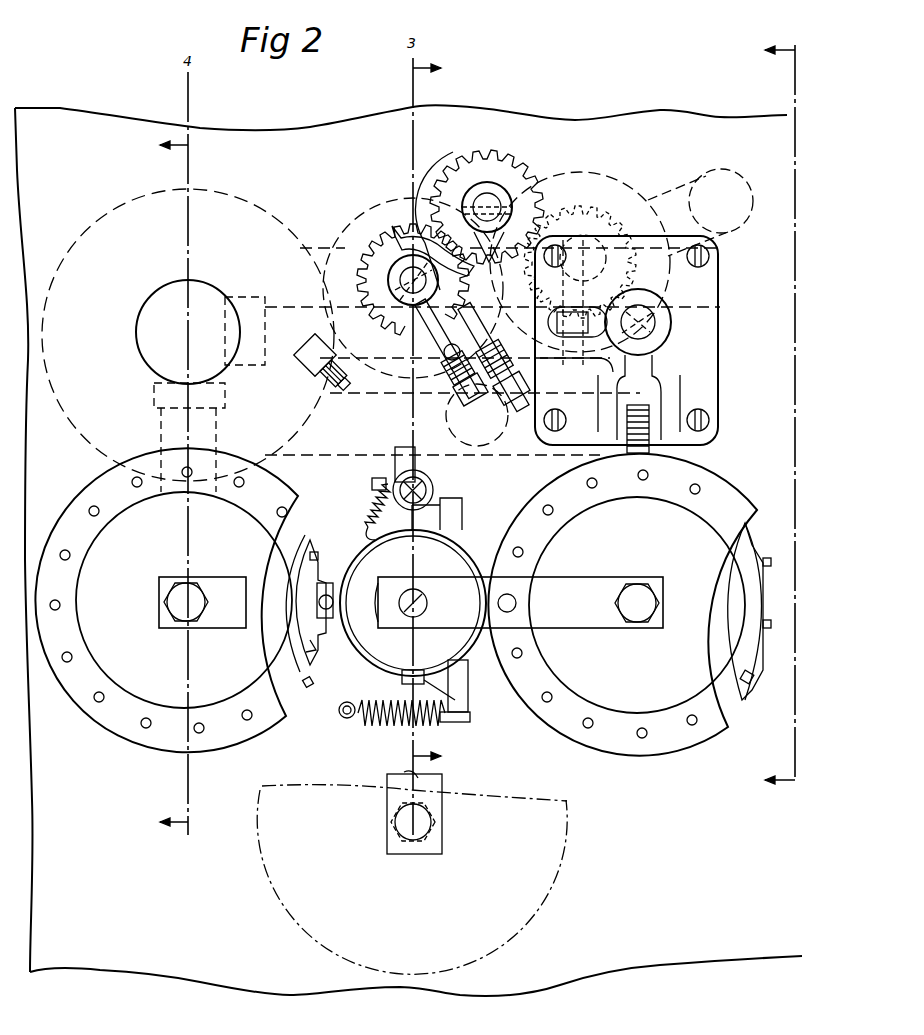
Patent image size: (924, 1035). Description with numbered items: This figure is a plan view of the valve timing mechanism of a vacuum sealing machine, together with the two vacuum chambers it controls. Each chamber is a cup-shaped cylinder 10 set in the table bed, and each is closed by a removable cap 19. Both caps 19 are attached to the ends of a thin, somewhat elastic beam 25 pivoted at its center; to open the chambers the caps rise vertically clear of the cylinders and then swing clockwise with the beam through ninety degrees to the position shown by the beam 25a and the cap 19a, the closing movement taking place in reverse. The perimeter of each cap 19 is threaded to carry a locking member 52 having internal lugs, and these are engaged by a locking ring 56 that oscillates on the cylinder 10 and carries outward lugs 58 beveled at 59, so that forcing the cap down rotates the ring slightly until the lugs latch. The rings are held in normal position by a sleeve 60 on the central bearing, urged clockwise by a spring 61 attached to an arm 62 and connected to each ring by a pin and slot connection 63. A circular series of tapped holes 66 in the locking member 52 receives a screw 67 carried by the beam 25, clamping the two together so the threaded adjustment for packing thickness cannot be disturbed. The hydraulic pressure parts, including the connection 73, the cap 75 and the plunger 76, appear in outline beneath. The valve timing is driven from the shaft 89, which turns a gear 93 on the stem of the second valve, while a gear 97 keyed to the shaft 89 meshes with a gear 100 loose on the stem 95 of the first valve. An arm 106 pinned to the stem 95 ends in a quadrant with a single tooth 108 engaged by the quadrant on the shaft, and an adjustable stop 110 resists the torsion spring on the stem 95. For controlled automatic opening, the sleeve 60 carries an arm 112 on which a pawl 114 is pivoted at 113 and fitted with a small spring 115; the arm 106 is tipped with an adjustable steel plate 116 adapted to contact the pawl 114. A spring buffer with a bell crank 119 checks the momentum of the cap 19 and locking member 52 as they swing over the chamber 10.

The cup-shaped cylinder 10 is at (738, 615).
The cap 19 is at (410, 602).
The cap in open position 19a is at (412, 880).
The beam 25 is at (560, 627).
The beam in open position 25a is at (442, 780).
The locking member 52 is at (672, 752).
The locking ring 56 is at (766, 568).
The lugs 58 is at (745, 686).
The beveled parts 59 is at (312, 680).
The sleeve 60 is at (462, 545).
The spring 61 is at (396, 722).
The arm 62 is at (469, 700).
The pin and slot connection 63 is at (330, 602).
The tapped holes 66 is at (588, 723).
The screw 67 is at (517, 601).
The connection 73 is at (297, 322).
The cap 75 is at (188, 332).
The plunger 76 is at (57, 272).
The shaft 89 is at (492, 204).
The gear 93 is at (357, 425).
The stem 95 is at (410, 278).
The gear 97 is at (522, 183).
The gear 100 is at (376, 275).
The arm 106 is at (472, 370).
The tooth 108 is at (396, 236).
The adjustable stop 110 is at (313, 392).
The arm 112 is at (462, 507).
The pivot 113 is at (433, 488).
The pawl 114 is at (395, 466).
The spring 115 is at (376, 508).
The adjustable steel plate 116 is at (545, 432).
The bell crank 119 is at (648, 362).